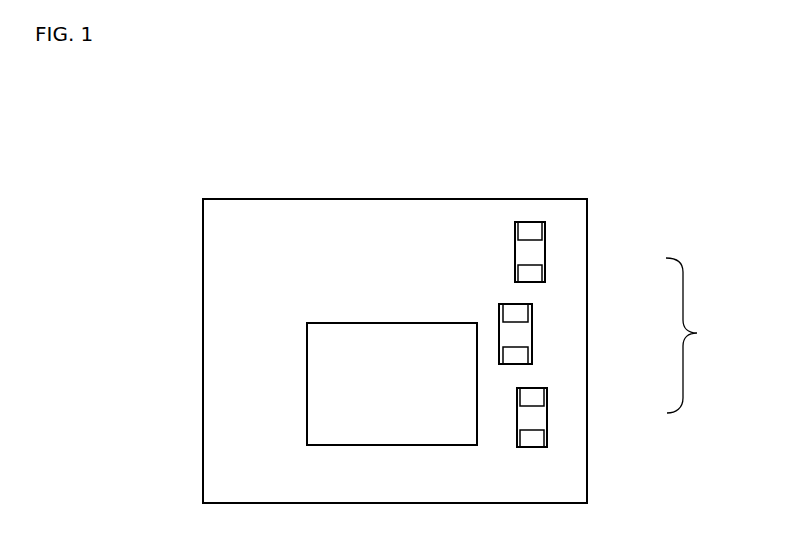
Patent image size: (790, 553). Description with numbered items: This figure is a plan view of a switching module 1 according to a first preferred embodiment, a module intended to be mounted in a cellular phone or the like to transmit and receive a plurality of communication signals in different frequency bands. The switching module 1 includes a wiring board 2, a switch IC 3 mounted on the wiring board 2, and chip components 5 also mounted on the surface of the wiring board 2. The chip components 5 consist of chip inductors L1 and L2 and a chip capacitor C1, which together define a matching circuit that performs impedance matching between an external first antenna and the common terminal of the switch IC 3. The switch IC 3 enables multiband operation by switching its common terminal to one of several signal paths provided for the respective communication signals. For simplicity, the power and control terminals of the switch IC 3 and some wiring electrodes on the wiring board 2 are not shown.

The switching module 1 is at (520, 172).
The wiring board 2 is at (343, 199).
The switch IC 3 is at (424, 445).
The chip components 5 is at (692, 335).
The chip capacitor C1 is at (545, 250).
The chip inductor L1 is at (532, 340).
The chip inductor L2 is at (547, 418).